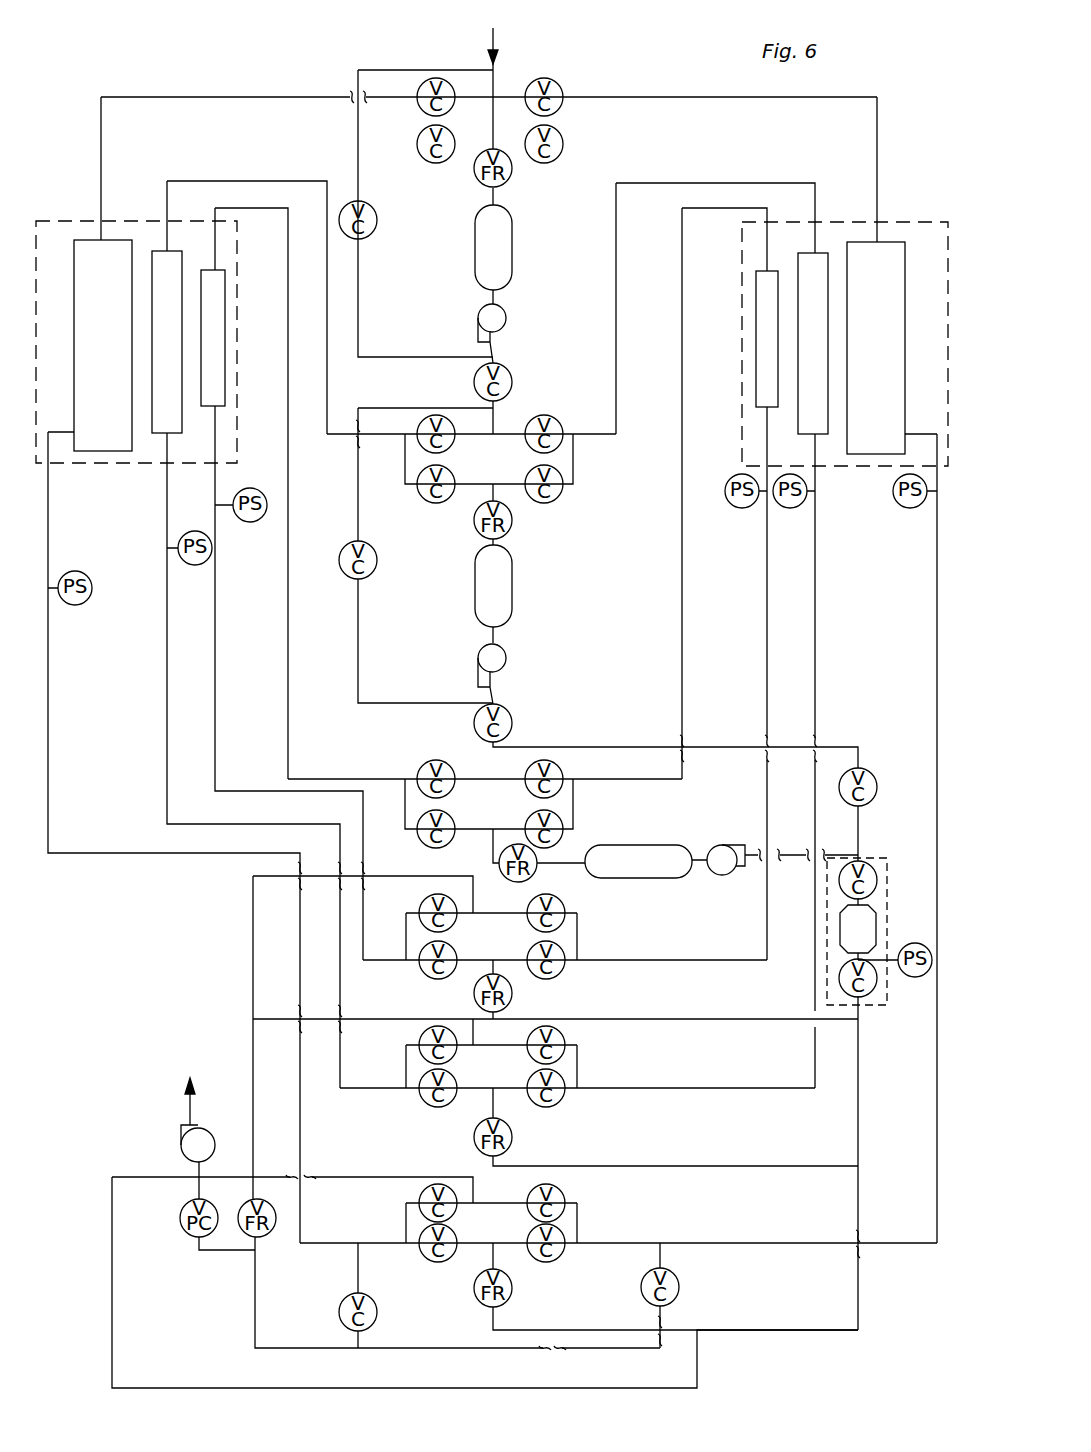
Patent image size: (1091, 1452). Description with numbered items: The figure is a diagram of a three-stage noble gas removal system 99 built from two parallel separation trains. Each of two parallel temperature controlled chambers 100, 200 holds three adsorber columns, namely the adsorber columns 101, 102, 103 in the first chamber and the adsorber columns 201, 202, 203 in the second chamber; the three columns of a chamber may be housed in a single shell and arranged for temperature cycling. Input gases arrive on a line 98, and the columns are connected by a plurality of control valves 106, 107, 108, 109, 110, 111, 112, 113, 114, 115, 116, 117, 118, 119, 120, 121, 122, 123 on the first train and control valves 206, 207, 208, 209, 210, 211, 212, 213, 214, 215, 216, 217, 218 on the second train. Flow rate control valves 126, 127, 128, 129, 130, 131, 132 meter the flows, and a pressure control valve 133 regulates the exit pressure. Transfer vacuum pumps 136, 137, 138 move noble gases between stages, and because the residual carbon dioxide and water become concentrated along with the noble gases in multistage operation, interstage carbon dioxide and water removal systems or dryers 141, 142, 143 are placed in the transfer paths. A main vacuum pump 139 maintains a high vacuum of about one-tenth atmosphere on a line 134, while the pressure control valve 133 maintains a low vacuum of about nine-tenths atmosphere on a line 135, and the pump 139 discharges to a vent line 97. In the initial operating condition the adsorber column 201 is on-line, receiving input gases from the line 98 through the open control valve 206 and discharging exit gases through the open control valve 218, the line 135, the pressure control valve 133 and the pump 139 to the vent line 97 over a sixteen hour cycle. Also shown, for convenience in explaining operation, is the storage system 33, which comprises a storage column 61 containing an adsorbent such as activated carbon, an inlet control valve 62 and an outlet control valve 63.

The storage system 33 is at (870, 858).
The storage column 61 is at (876, 925).
The inlet control valve 62 is at (878, 878).
The outlet control valve 63 is at (870, 992).
The vent line 97 is at (188, 1106).
The line 98 is at (493, 32).
The removal system 99 is at (287, 82).
The temperature controlled chamber 100 is at (75, 222).
The adsorber column 101 is at (80, 454).
The adsorber column 102 is at (160, 436).
The adsorber column 103 is at (226, 373).
The control valve 106 is at (430, 78).
The control valve 107 is at (424, 158).
The control valve 108 is at (452, 446).
The control valve 109 is at (425, 498).
The control valve 110 is at (430, 760).
The control valve 111 is at (428, 842).
The control valve 112 is at (420, 905).
The control valve 113 is at (430, 972).
The control valve 114 is at (420, 1038).
The control valve 115 is at (425, 1102).
The control valve 116 is at (418, 1192).
The control valve 117 is at (428, 1262).
The control valve 118 is at (341, 1316).
The control valve 119 is at (513, 376).
The control valve 120 is at (513, 720).
The control valve 121 is at (375, 232).
The control valve 122 is at (375, 573).
The control valve 123 is at (866, 770).
The flow rate control valve 126 is at (478, 172).
The flow rate control valve 127 is at (480, 530).
The flow rate control valve 128 is at (532, 864).
The flow rate control valve 129 is at (515, 1003).
The flow rate control valve 130 is at (513, 1138).
The flow rate control valve 131 is at (513, 1290).
The flow rate control valve 132 is at (262, 1238).
The pressure control valve 133 is at (182, 1232).
The line 134 is at (588, 1390).
The line 135 is at (254, 1312).
The transfer vacuum pump 136 is at (508, 317).
The transfer vacuum pump 137 is at (508, 655).
The transfer vacuum pump 138 is at (728, 845).
The main vacuum pump 139 is at (178, 1138).
The dryer system 141 is at (513, 222).
The dryer system 142 is at (513, 577).
The dryer system 143 is at (680, 880).
The temperature controlled chamber 200 is at (903, 222).
The adsorber column 201 is at (886, 454).
The adsorber column 202 is at (815, 437).
The adsorber column 203 is at (755, 382).
The control valve 206 is at (558, 80).
The control valve 207 is at (560, 152).
The control valve 208 is at (550, 420).
The control valve 209 is at (560, 497).
The control valve 210 is at (563, 764).
The control valve 211 is at (565, 838).
The control valve 212 is at (535, 927).
The control valve 213 is at (566, 955).
The control valve 214 is at (566, 1034).
The control valve 215 is at (563, 1102).
The control valve 216 is at (566, 1194).
The control valve 217 is at (566, 1258).
The control valve 218 is at (680, 1283).